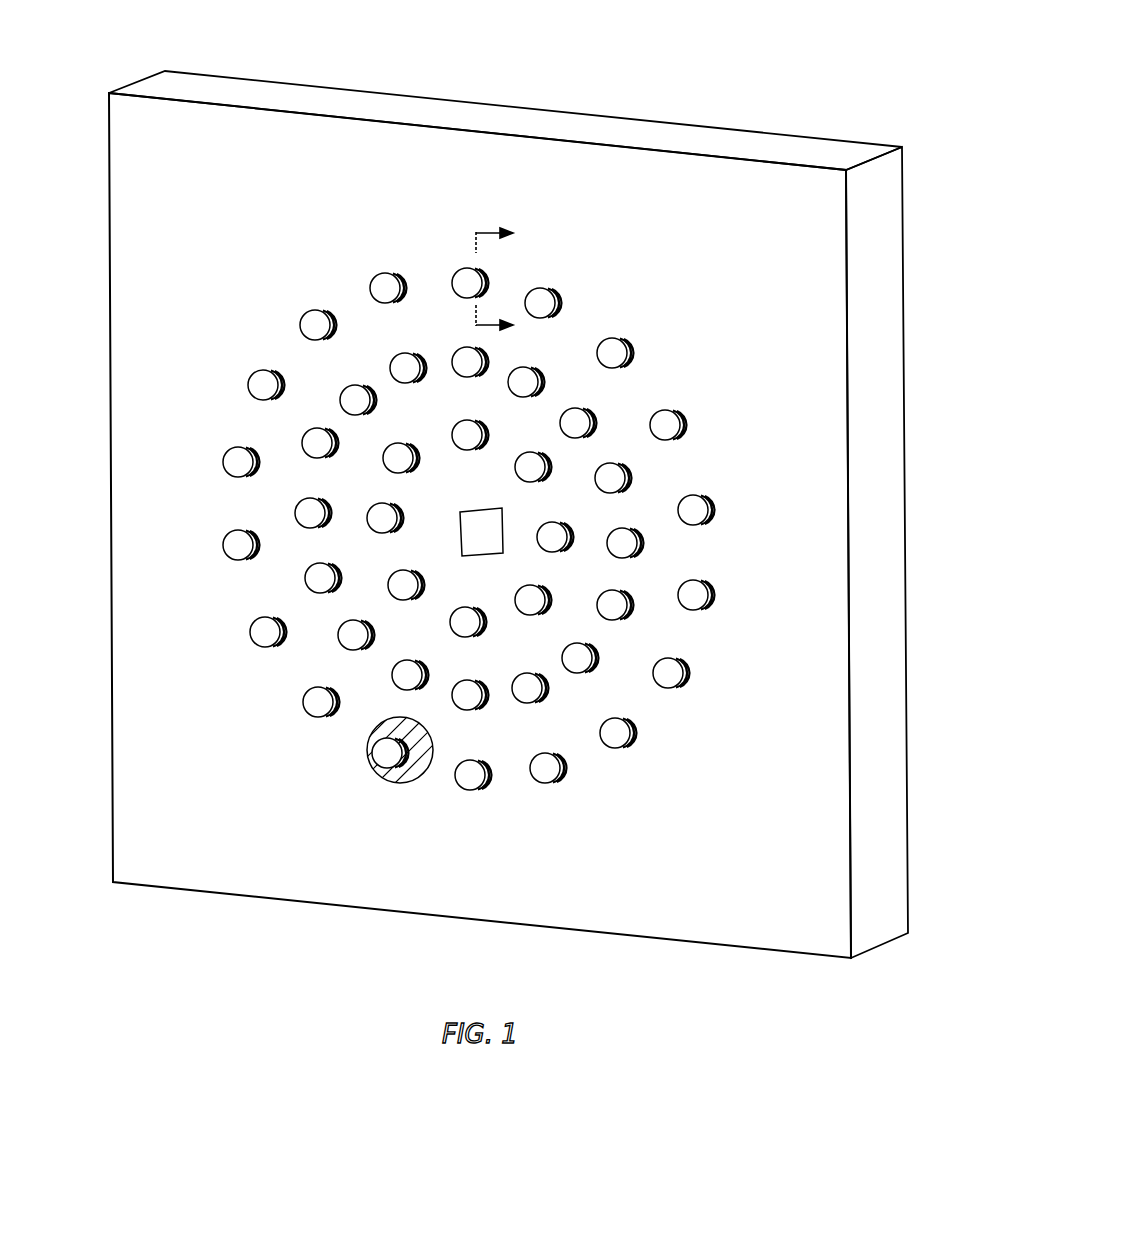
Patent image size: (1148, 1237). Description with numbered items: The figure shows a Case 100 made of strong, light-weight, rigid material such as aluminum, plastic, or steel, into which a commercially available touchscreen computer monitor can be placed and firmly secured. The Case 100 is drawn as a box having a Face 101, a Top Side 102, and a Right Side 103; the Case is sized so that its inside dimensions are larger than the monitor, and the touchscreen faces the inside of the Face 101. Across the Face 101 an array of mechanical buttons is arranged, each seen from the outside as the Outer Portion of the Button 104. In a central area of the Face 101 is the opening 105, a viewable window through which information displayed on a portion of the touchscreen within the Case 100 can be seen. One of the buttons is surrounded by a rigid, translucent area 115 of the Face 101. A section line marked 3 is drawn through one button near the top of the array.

The Case 100 is at (501, 492).
The Face of Case 101 is at (145, 168).
The Top Side of Case 102 is at (452, 117).
The Right Side of Case 103 is at (877, 220).
The Outer Portion of the Button 104 is at (233, 553).
The opening in the Face of the Case 105 is at (502, 527).
The rigid, translucent area 115 is at (393, 778).
The section line 3- 3 is at (502, 283).